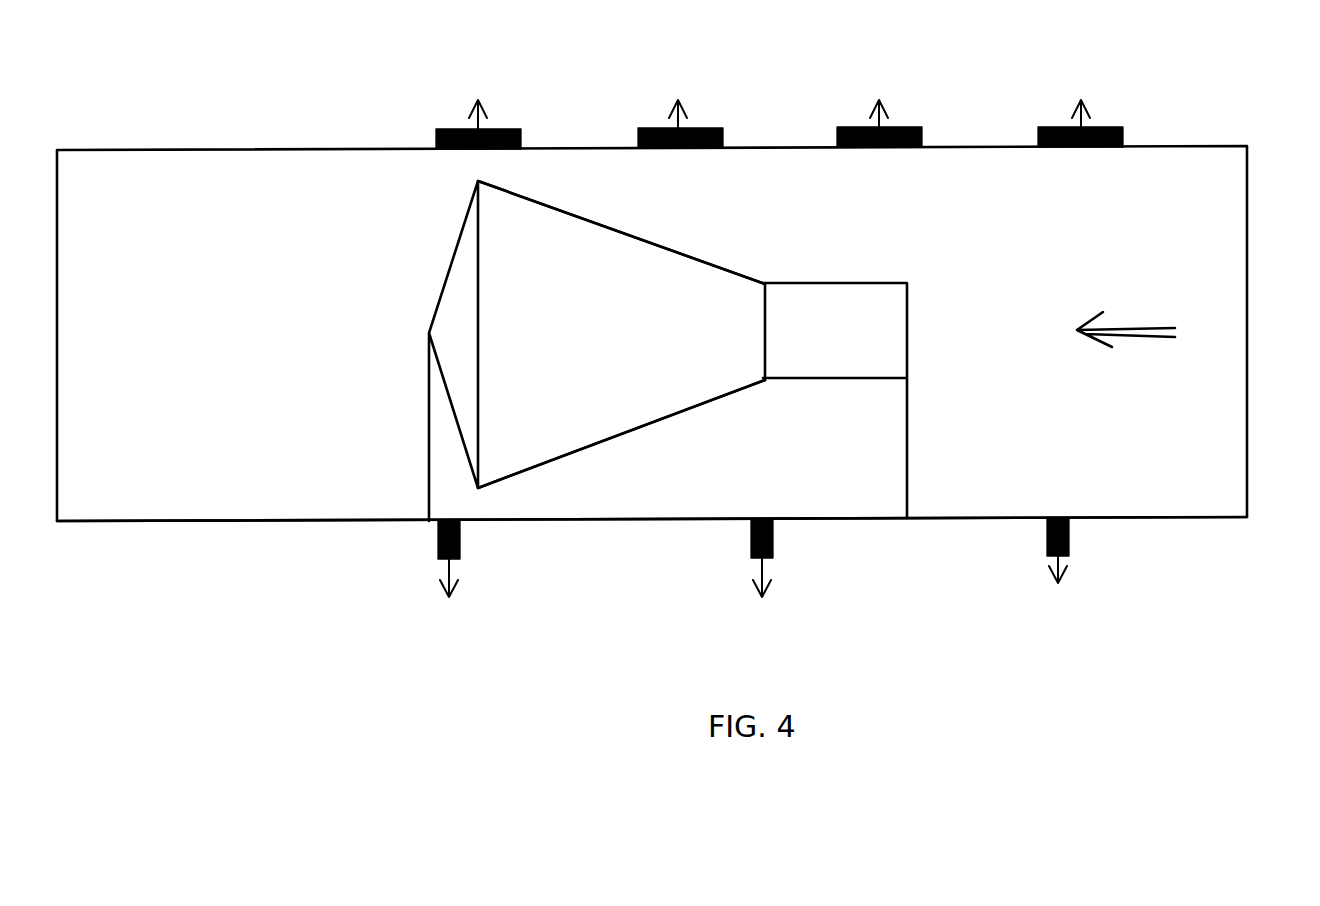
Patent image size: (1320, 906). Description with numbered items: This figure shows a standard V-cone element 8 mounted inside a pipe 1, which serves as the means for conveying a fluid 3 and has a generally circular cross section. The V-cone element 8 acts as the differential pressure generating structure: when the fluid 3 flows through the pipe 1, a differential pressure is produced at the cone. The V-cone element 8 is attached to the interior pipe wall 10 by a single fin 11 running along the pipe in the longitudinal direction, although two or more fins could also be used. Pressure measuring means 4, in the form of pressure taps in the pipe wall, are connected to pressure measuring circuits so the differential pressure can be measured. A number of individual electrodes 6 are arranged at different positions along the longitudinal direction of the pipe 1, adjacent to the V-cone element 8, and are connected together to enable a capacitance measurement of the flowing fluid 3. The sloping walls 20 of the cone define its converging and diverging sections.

The pipe 1 is at (246, 150).
The fluid 3 is at (1126, 316).
The pressure measuring means 4 is at (460, 540).
The electrodes 6 is at (455, 129).
The V-cone element 8 is at (673, 312).
The interior pipe wall 10 is at (261, 520).
The fin 11 is at (860, 460).
The horn walls 20 is at (620, 204).